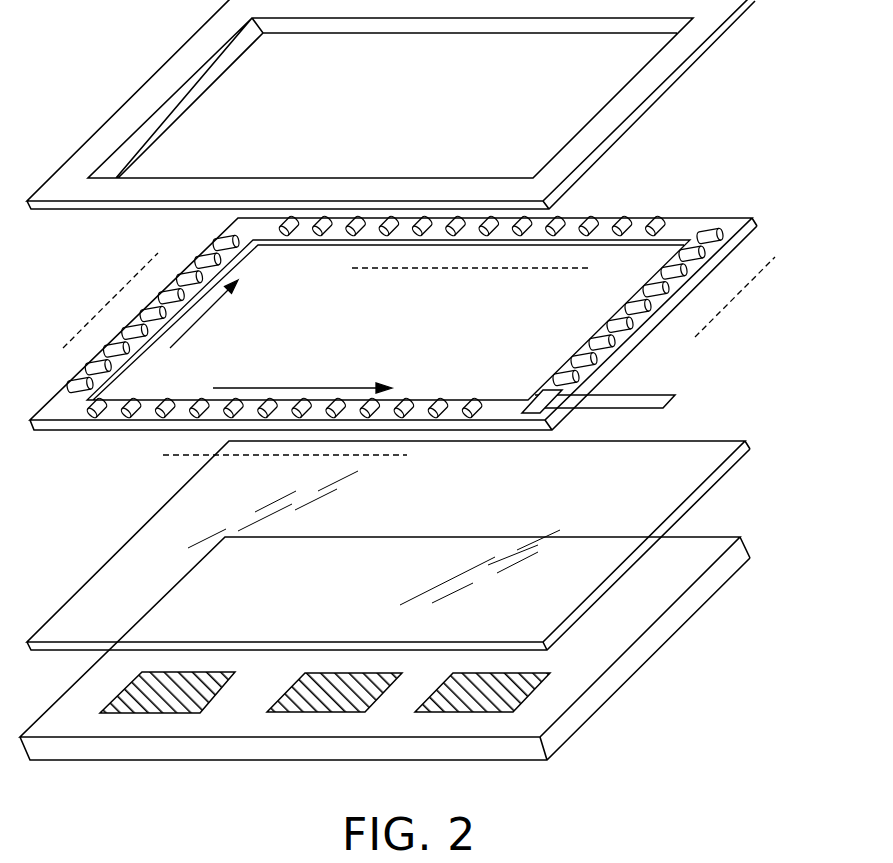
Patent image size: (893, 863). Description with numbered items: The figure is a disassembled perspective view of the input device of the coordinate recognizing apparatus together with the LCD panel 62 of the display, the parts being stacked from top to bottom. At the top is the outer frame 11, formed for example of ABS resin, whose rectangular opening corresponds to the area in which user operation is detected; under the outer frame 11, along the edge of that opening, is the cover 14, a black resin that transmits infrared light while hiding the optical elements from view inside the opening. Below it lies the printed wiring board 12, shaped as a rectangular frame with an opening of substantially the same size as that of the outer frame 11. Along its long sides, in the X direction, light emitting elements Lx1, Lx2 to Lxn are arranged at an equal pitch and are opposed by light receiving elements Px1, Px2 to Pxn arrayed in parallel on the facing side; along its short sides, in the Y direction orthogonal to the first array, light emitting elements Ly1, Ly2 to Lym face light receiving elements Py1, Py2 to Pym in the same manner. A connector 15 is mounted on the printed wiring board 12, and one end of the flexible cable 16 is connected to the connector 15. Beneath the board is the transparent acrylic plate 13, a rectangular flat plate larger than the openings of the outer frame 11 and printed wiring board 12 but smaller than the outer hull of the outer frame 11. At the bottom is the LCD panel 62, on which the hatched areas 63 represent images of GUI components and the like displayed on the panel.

The outer frame 11 is at (643, 107).
The printed wiring board 12 is at (718, 222).
The transparent acrylic plate 13 is at (720, 448).
The cover 14 is at (340, 30).
The connector 15 is at (543, 397).
The flexible cable 16 is at (657, 402).
The LCD panel 62 is at (665, 628).
The areas 63 is at (203, 672).
The light emitting element Lx1 is at (97, 417).
The light emitting element Lx2 is at (133, 417).
The light emitting element Lxn is at (465, 413).
The light emitting element Ly1 is at (68, 383).
The light emitting element Ly2 is at (88, 365).
The light emitting element Lym is at (213, 242).
The light receiving element Px1 is at (282, 233).
The light receiving element Px2 is at (313, 233).
The light receiving element Pxn is at (650, 232).
The light receiving element Py1 is at (578, 378).
The light receiving element Py2 is at (595, 358).
The light receiving element Pym is at (722, 237).